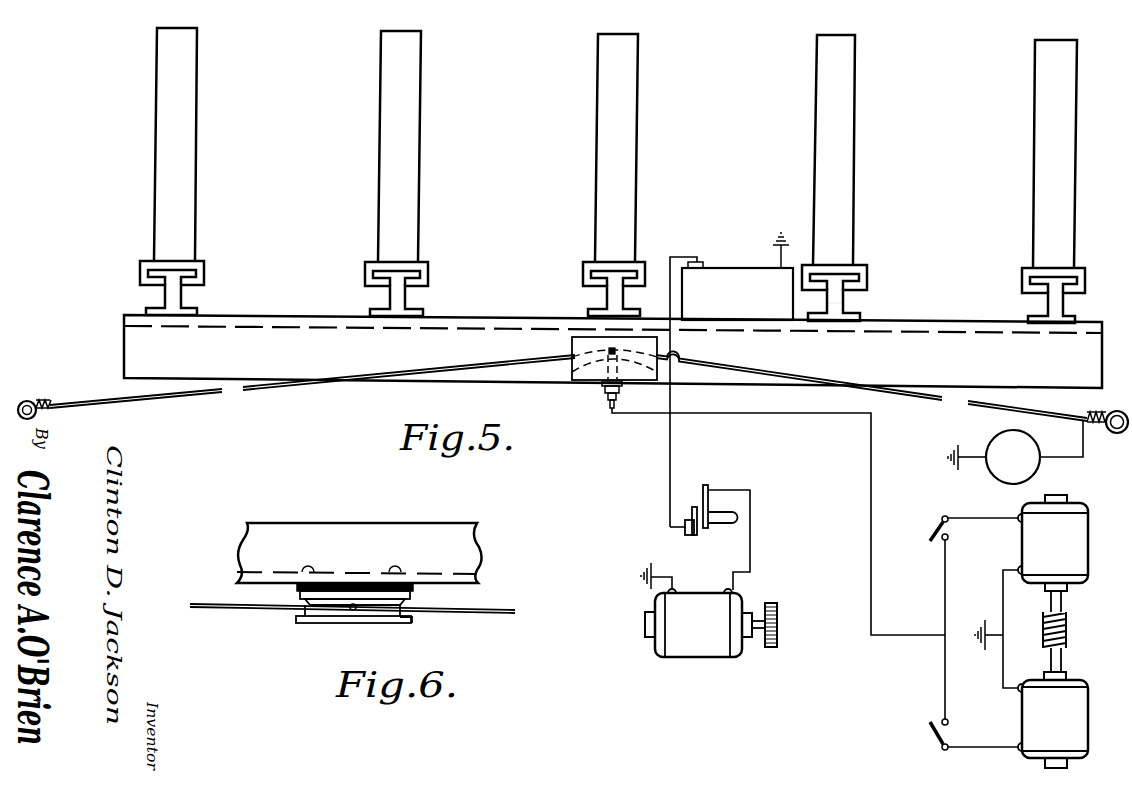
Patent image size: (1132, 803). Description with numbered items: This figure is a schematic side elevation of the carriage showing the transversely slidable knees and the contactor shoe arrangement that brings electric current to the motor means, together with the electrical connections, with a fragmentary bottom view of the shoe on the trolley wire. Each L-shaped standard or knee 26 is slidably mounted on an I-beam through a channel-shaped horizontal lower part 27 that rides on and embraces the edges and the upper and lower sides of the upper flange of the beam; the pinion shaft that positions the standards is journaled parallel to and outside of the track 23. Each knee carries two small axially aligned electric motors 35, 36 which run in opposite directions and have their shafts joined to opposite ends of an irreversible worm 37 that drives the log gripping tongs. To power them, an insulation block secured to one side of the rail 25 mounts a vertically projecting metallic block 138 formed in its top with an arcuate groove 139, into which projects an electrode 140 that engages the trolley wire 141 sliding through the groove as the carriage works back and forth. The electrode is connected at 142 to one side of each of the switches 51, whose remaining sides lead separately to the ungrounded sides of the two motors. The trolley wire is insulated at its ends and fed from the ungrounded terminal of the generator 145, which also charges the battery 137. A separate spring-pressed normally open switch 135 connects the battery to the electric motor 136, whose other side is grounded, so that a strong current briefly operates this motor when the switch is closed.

In FIG. 5, the track 23 is at (1094, 359).
In FIG. 5, the rail 25 is at (845, 303).
In FIG. 6, the rail 25 is at (478, 553).
In FIG. 5, the L-shaped standard or knee 26 is at (856, 189).
In FIG. 5, the channel-shaped horizontal lower part 27 is at (868, 284).
In FIG. 5, the electric motor 35 is at (1082, 724).
In FIG. 5, the electric motor 36 is at (1090, 546).
In FIG. 5, the irreversible worm 37 is at (1066, 637).
In FIG. 5, the switch 51 is at (936, 522).
In FIG. 5, the switch 135 is at (697, 482).
In FIG. 5, the electric motor 136 is at (703, 650).
In FIG. 5, the battery 137 is at (734, 268).
In FIG. 6, the battery 137 is at (295, 585).
In FIG. 5, the metallic block 138 is at (572, 360).
In FIG. 6, the metallic block 138 is at (330, 623).
In FIG. 6, the arcuate groove 139 is at (400, 618).
In FIG. 5, the electrode 140 is at (607, 389).
In FIG. 6, the electrode 140 is at (357, 614).
In FIG. 5, the trolley wire 141 is at (283, 386).
In FIG. 6, the trolley wire 141 is at (497, 614).
In FIG. 5, the electrode connection 142 is at (868, 527).
In FIG. 5, the generator 145 is at (997, 440).